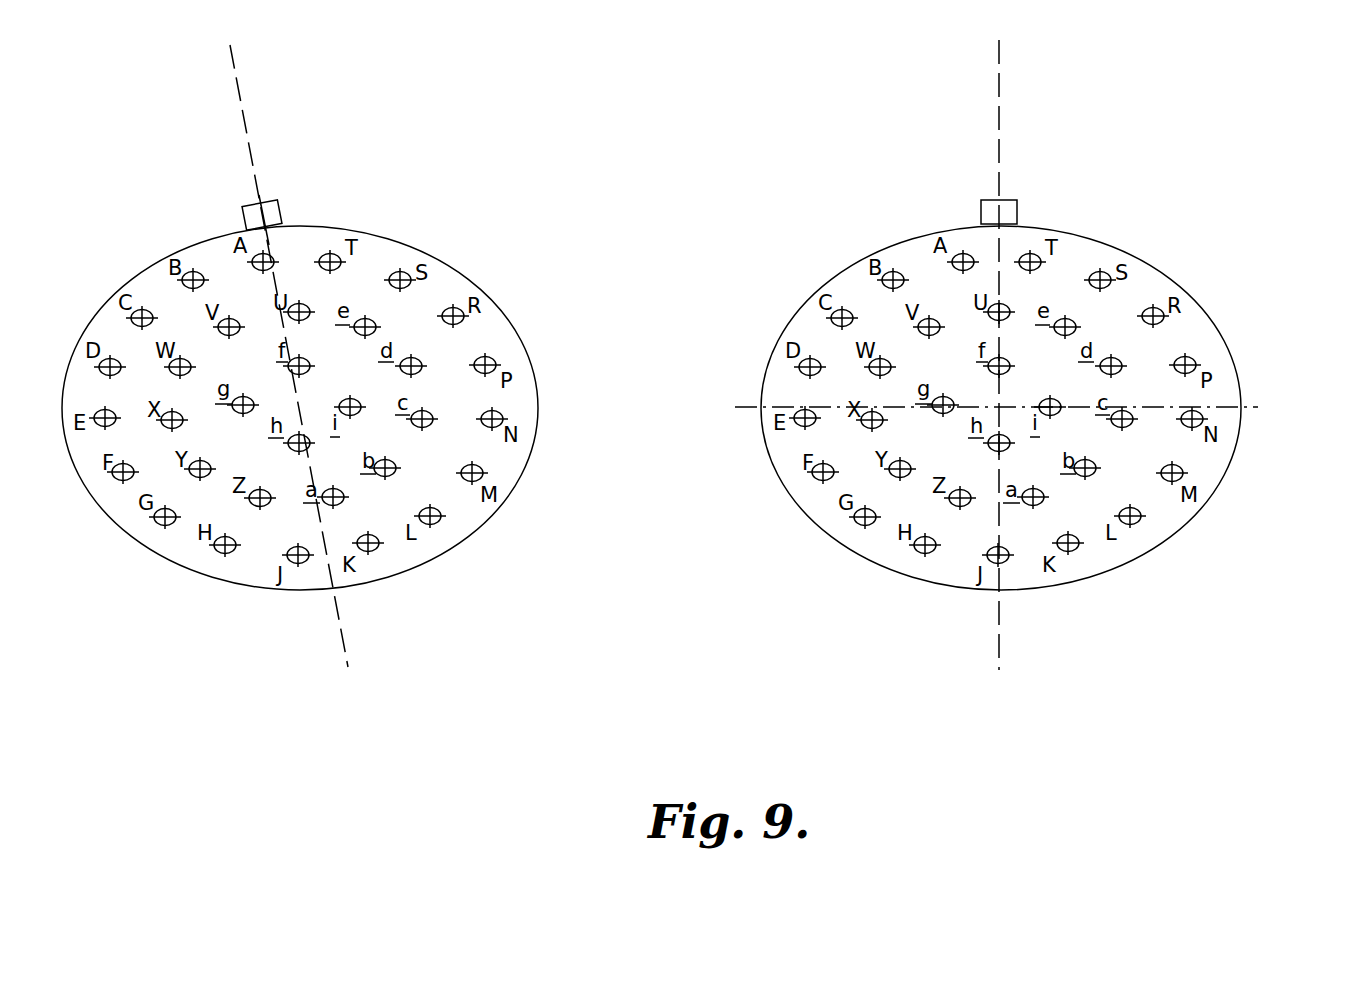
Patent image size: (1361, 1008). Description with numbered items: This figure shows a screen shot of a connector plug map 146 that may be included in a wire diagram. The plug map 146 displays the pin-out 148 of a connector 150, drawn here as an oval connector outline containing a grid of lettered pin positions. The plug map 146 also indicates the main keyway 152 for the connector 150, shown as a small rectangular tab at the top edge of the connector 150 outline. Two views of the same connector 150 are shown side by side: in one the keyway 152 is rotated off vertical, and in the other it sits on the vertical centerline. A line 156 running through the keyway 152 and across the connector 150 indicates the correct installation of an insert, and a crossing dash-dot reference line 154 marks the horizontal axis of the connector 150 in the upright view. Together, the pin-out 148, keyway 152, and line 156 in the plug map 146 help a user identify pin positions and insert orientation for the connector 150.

The connector plug map 146 is at (1039, 764).
The pin-out 148 is at (370, 304).
The connector 150 is at (516, 308).
The main keyway 152 is at (272, 203).
The horizontal axis 154 is at (1258, 407).
The line 156 is at (342, 648).